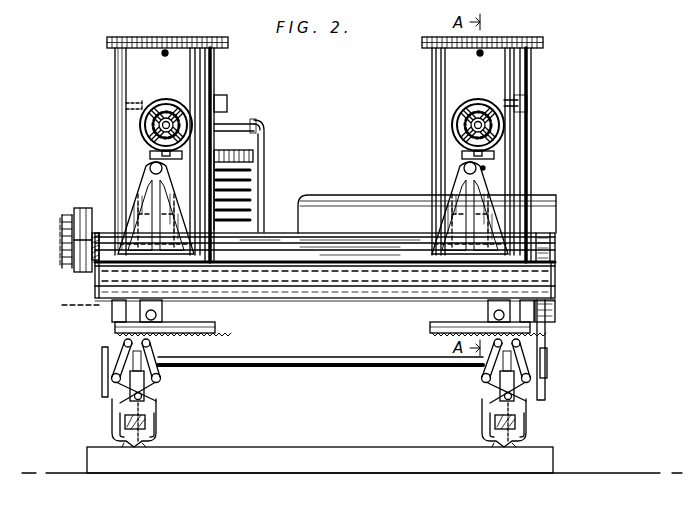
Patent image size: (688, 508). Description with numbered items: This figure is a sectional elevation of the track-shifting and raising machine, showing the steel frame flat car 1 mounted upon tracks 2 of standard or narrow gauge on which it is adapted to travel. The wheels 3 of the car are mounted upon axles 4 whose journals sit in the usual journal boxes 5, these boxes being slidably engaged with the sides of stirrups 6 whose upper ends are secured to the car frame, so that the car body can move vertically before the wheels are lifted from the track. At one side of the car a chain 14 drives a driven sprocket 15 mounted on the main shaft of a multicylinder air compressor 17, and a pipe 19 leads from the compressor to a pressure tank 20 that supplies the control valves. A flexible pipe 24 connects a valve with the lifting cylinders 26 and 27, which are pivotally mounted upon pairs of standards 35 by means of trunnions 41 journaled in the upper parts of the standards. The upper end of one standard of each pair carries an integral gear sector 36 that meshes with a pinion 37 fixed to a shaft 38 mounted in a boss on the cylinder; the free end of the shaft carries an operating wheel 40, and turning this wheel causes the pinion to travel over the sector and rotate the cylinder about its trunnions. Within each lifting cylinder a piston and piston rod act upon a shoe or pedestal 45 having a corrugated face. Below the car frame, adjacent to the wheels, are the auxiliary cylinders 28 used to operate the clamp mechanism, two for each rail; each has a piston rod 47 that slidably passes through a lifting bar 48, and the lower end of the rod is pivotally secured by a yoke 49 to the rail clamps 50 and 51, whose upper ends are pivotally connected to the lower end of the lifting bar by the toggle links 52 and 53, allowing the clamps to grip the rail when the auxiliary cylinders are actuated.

The steel frame flat car 1 is at (557, 272).
The tracks 2 is at (130, 458).
The wheels 3 is at (574, 296).
The axles 4 is at (292, 375).
The journal boxes 5 is at (102, 376).
The stirrups 6 is at (112, 390).
The chain 14 is at (62, 220).
The driven sprocket 15 is at (62, 244).
The multicylinder air compressor 17 is at (240, 172).
The pipe 19 is at (266, 137).
The pressure tank 20 is at (336, 196).
The flexible pipe 24 is at (165, 55).
The lifting cylinder 26 is at (520, 36).
The lifting cylinder 27 is at (150, 36).
The auxiliary cylinders 28 is at (133, 95).
The standards 35 is at (138, 178).
The gear sector 36 is at (150, 154).
The pinion 37 is at (160, 125).
The shaft 38 is at (227, 104).
The operating wheel 40 is at (126, 103).
The trunnions 41 is at (500, 168).
The shoe or pedestal 45 is at (216, 326).
The piston rod 47 is at (104, 358).
The lifting bar 48 is at (540, 313).
The yoke 49 is at (142, 388).
The rail clamp 50 is at (158, 421).
The rail clamp 51 is at (114, 418).
The toggle link 52 is at (156, 350).
The toggle link 53 is at (118, 361).